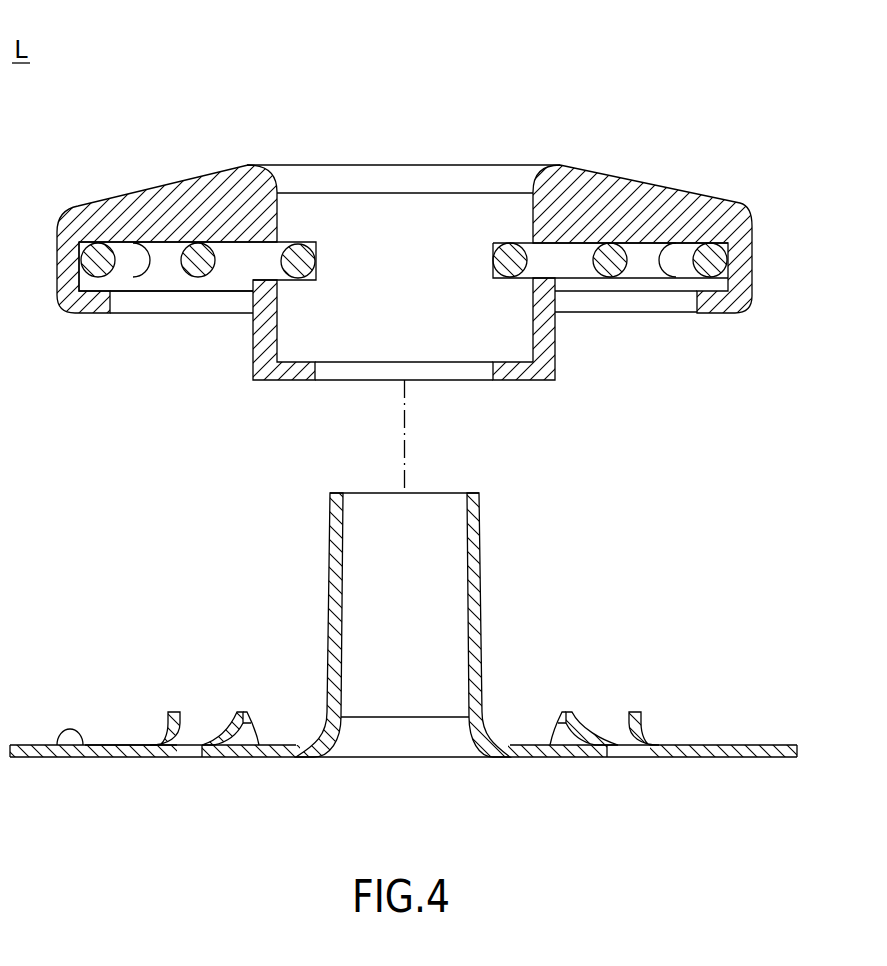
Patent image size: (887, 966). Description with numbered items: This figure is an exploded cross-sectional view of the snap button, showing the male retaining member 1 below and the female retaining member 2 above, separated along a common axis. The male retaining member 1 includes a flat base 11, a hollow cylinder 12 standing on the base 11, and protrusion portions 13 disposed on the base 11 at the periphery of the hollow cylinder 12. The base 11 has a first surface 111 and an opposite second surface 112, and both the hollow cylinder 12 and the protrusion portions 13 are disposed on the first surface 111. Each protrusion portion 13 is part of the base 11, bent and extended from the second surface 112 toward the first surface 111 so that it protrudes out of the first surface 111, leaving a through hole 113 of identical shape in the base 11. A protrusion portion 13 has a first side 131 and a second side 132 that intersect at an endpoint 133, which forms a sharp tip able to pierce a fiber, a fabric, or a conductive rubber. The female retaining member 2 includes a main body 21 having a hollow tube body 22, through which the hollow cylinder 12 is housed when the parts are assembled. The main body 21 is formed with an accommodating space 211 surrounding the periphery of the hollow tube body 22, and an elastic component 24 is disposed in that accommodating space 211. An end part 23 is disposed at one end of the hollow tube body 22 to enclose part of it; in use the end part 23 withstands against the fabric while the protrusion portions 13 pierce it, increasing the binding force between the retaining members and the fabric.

The male retaining member 1 is at (403, 682).
The base 11 is at (403, 800).
The first surface 111 is at (62, 744).
The second surface 112 is at (131, 789).
The through hole 113 is at (186, 750).
The hollow cylinder 12 is at (478, 534).
The protrusion portion 13 is at (404, 677).
The first side 131 is at (404, 696).
The second side 132 is at (226, 734).
The endpoint 133 is at (243, 711).
The female retaining member 2 is at (423, 292).
The main body 21 is at (752, 258).
The accommodating space 211 is at (233, 262).
The hollow tube body 22 is at (556, 338).
The end part 23 is at (511, 380).
The elastic component 24 is at (189, 277).